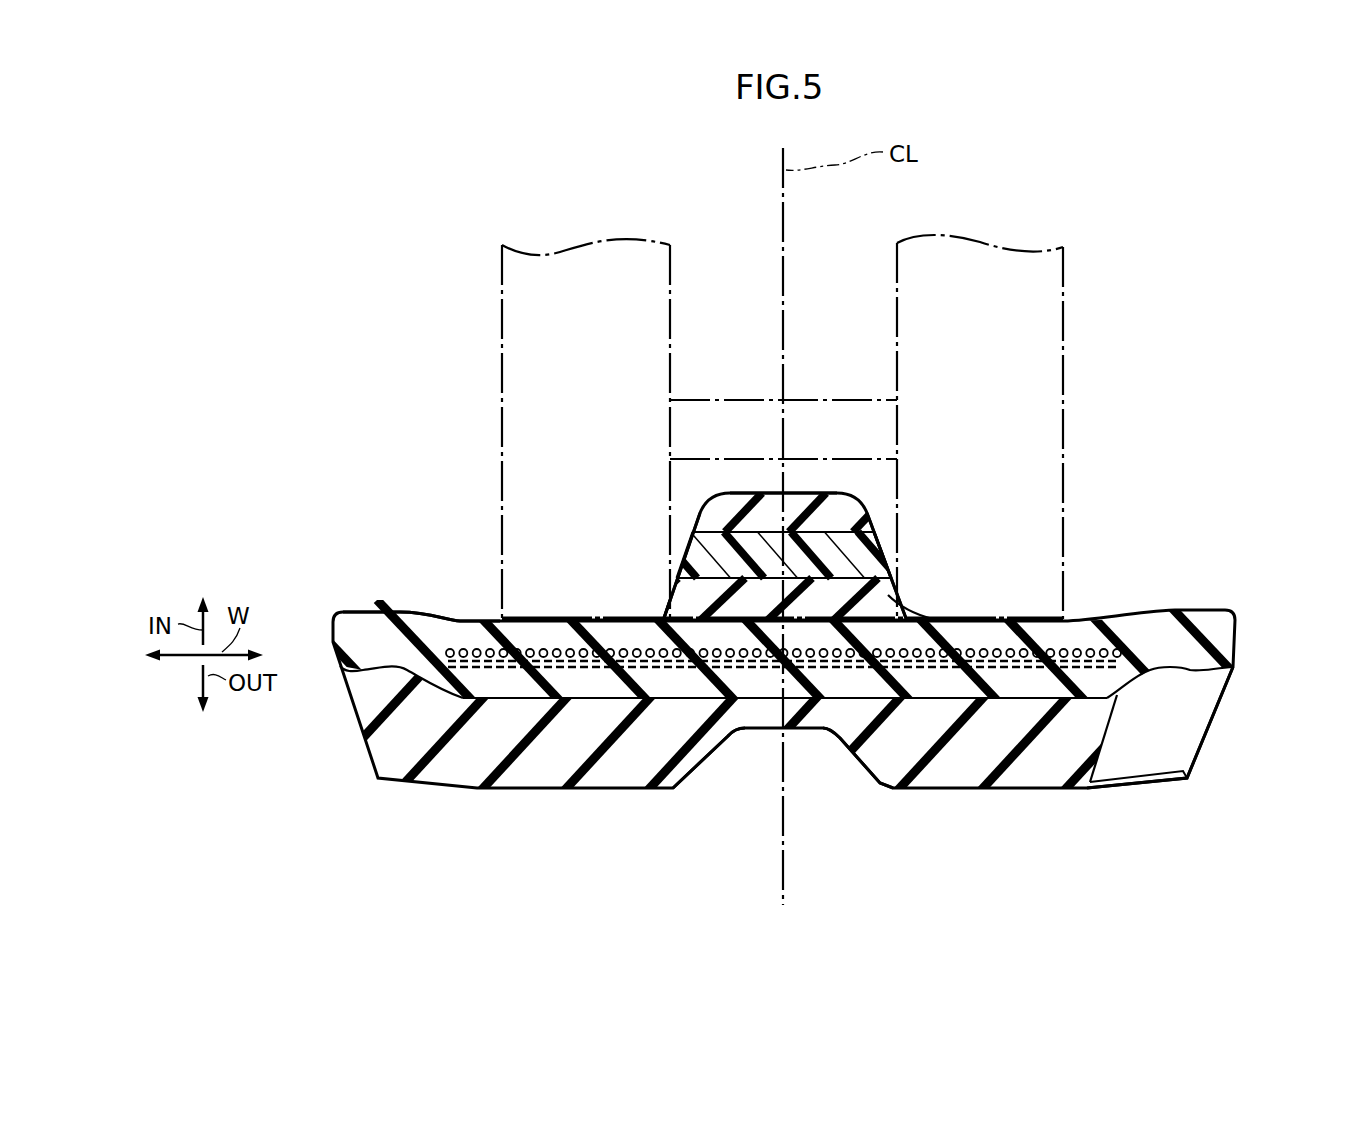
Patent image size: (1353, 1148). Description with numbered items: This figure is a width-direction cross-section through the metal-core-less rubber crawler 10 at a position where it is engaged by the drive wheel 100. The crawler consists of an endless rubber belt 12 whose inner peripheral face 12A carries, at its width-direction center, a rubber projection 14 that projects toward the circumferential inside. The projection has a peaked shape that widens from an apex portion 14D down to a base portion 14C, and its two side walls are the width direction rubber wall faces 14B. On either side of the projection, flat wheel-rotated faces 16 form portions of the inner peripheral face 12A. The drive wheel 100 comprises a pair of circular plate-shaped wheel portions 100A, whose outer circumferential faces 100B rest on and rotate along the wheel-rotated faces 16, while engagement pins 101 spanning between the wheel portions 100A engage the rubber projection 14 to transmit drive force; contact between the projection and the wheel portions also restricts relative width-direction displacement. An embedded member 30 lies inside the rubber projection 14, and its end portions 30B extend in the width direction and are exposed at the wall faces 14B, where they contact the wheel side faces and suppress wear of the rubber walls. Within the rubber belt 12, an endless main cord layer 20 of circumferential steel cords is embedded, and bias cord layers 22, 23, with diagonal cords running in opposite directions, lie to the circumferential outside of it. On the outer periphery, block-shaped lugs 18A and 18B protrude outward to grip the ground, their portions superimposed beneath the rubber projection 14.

The rubber crawler 10 is at (336, 462).
The rubber belt 12 is at (603, 618).
The inner peripheral face 12A is at (466, 620).
The rubber projection 14 is at (780, 516).
The width direction rubber wall face 14B is at (699, 514).
The base portion 14C is at (658, 616).
The apex portion 14D is at (750, 493).
The wheel-rotated face 16 is at (548, 620).
The lug 18A is at (637, 790).
The lug 18B is at (878, 777).
The main cord layer 20 is at (1120, 695).
The bias cord layer 22 is at (540, 657).
The bias cord layer 23 is at (484, 668).
The embedded member 30 is at (833, 522).
The end portion 30B is at (685, 549).
The drive wheel 100 is at (841, 427).
The wheel portion 100A is at (1064, 370).
The outer circumferential face 100B is at (1066, 620).
The engagement pin 101 is at (812, 400).